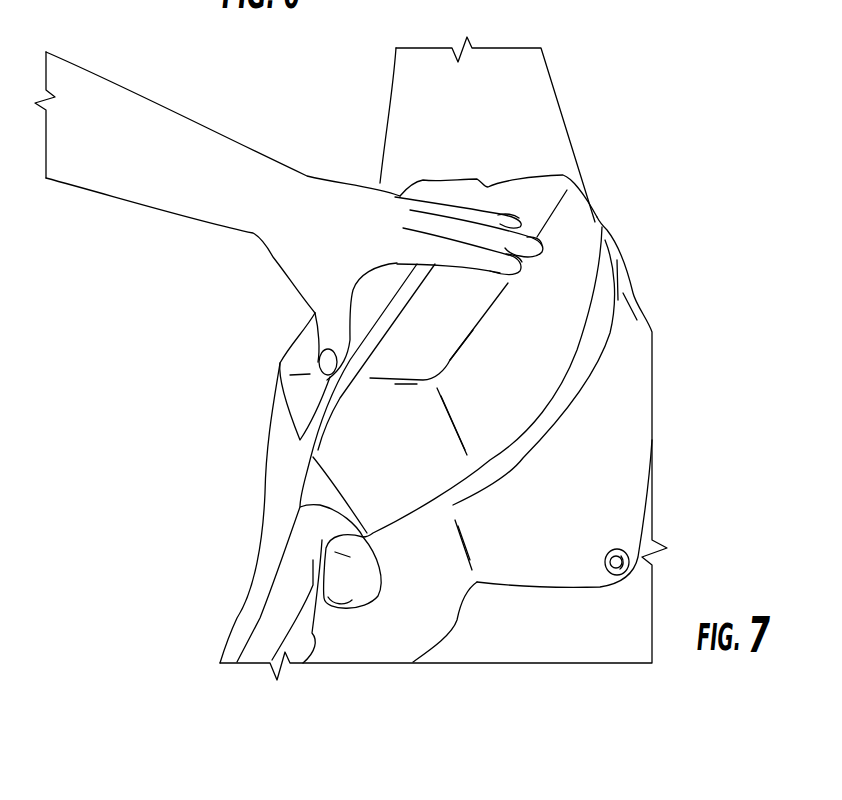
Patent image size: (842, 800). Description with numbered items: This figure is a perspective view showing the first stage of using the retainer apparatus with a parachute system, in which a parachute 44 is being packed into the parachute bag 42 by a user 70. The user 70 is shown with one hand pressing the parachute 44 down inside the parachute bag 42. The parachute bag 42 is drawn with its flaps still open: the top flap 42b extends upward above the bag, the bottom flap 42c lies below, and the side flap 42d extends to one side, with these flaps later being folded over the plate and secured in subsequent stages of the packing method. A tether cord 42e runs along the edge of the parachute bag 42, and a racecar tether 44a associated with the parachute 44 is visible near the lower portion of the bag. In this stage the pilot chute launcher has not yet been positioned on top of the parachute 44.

The user 70 is at (253, 212).
The parachute bag 42 is at (527, 605).
The top flap of parachute bag 42b is at (487, 97).
The bottom flap of parachute bag 42c is at (433, 605).
The side flap of parachute bag 42d is at (595, 428).
The tether cord 42e is at (318, 410).
The parachute 44 is at (517, 350).
The racecar tether 44a is at (272, 637).